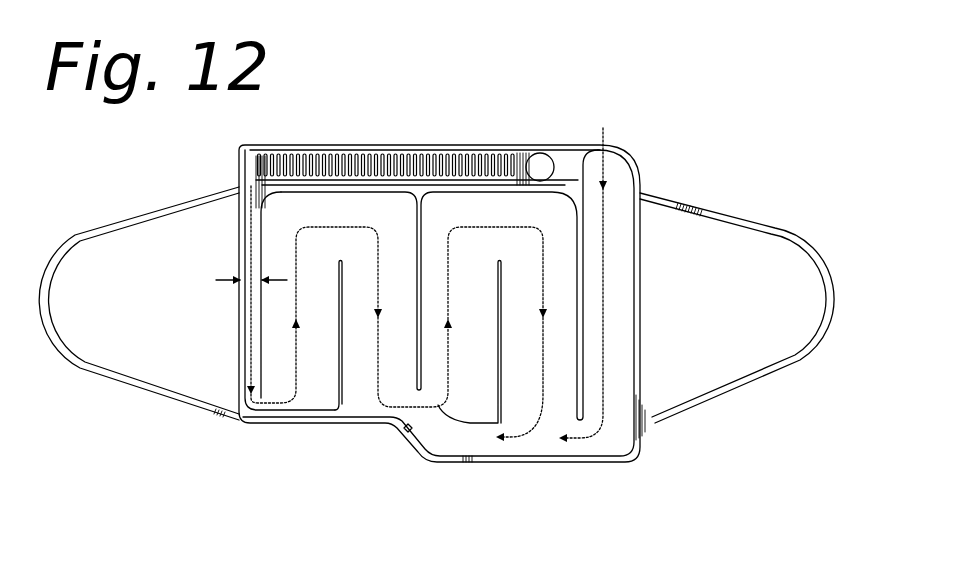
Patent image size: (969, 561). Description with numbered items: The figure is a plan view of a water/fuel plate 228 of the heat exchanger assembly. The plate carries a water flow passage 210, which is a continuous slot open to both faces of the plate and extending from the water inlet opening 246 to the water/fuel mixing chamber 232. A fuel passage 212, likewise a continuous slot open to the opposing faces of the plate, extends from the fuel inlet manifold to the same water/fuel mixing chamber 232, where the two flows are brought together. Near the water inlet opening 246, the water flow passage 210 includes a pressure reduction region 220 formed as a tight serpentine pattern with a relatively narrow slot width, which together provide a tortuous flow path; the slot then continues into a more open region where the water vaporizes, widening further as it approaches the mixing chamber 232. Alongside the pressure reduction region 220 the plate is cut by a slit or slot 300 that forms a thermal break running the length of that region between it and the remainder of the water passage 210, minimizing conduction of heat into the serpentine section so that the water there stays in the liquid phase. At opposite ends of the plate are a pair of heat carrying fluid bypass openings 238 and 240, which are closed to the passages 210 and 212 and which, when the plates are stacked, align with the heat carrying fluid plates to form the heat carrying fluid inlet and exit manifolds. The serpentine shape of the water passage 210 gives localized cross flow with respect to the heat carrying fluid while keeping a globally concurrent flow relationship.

The water flow passage 210 is at (277, 400).
The fuel passage 212 is at (603, 210).
The pressure reduction region 220 is at (520, 137).
The water/fuel plate 228 is at (157, 408).
The water/fuel mixing chamber 232 is at (480, 441).
The heat carrying fluid bypass opening 238 is at (120, 240).
The heat carrying fluid bypass opening 240 is at (748, 244).
The water inlet opening 246 is at (547, 152).
The slit or slot 300 is at (305, 183).